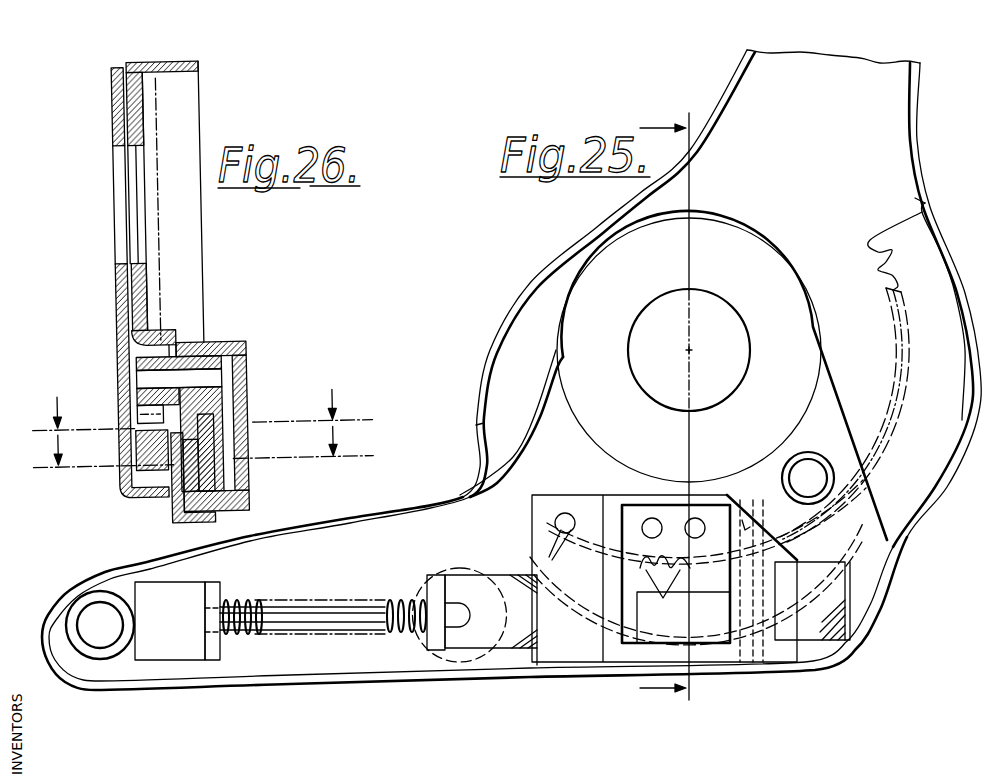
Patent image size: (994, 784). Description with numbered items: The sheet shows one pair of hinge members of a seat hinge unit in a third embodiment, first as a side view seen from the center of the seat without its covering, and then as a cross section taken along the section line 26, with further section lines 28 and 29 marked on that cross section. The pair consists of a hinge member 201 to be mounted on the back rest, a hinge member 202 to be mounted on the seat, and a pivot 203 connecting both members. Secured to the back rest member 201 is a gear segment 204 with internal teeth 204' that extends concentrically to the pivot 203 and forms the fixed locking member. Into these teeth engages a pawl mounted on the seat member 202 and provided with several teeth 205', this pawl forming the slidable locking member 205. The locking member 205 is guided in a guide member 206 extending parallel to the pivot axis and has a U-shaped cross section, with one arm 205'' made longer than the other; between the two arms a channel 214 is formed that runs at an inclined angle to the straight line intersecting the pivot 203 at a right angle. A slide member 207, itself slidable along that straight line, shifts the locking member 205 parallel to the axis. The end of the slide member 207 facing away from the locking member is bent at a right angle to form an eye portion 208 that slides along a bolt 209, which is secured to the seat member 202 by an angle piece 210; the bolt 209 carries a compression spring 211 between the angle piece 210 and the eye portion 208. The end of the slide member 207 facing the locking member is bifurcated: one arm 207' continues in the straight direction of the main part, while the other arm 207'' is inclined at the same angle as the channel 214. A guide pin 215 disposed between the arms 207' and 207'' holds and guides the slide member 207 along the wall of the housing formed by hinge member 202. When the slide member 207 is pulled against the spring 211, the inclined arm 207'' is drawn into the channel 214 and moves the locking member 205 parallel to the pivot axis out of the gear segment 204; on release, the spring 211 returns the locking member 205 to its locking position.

In FIG. 25, the hinge member 201 is at (918, 143).
In FIG. 26, the hinge member 201 is at (113, 111).
In FIG. 25, the hinge member 202 is at (380, 516).
In FIG. 26, the hinge member 202 is at (192, 122).
In FIG. 25, the pivot 203 is at (689, 350).
In FIG. 26, the pivot 203 is at (146, 207).
In FIG. 25, the gear segment 204 is at (916, 303).
In FIG. 26, the gear segment 204 is at (140, 387).
In FIG. 25, the internal teeth 204' is at (844, 414).
In FIG. 26, the internal teeth 204' is at (118, 403).
In FIG. 25, the slidable locking member 205 is at (657, 553).
In FIG. 26, the slidable locking member 205 is at (147, 377).
In FIG. 25, the teeth of locking member 205' is at (683, 599).
In FIG. 26, the teeth of locking member 205' is at (123, 451).
In FIG. 26, the arm of U-shaped cross section 205'' is at (243, 461).
In FIG. 25, the guide member 206 is at (726, 655).
In FIG. 26, the guide member 206 is at (238, 343).
In FIG. 25, the slide member 207 is at (474, 602).
In FIG. 26, the arm of slide member 207' is at (170, 485).
In FIG. 25, the inclined arm of slide member 207'' is at (817, 586).
In FIG. 26, the inclined arm of slide member 207'' is at (252, 451).
In FIG. 25, the eye portion 208 is at (430, 578).
In FIG. 25, the bolt 209 is at (290, 612).
In FIG. 25, the angle piece 210 is at (212, 593).
In FIG. 25, the compression spring 211 is at (236, 596).
In FIG. 26, the channel 214 is at (212, 422).
In FIG. 25, the guide pin 215 is at (750, 520).
In FIG. 25, the section line 26— 26 is at (663, 411).
In FIG. 26, the section line 28— 28 is at (199, 407).
In FIG. 26, the section line 29— 29 is at (200, 445).